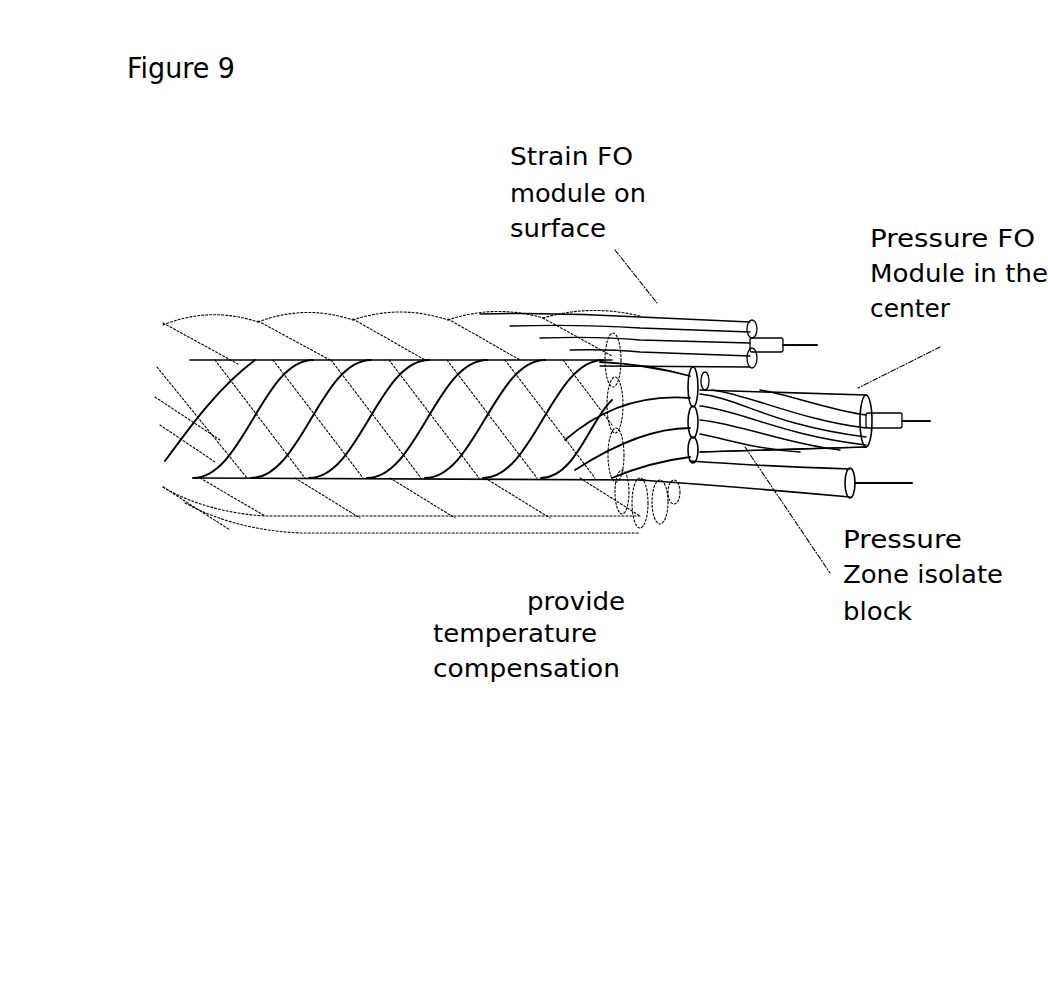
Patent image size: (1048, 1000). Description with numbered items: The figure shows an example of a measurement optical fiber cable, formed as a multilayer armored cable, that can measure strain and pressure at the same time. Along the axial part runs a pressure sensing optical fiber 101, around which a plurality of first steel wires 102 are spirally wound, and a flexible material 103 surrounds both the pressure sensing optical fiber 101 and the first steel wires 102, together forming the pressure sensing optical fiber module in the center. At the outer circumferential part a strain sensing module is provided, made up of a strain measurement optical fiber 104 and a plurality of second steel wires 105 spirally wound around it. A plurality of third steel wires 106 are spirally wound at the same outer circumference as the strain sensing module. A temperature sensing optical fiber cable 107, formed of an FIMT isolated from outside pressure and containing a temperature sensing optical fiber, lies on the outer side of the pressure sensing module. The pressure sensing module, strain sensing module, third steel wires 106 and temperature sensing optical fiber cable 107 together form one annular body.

The pressure sensing optical fiber 101 is at (890, 409).
The first steel wires 102 is at (857, 448).
The flexible material 103 is at (765, 392).
The strain measurement optical fiber 104 is at (768, 337).
The second steel wires 105 is at (683, 318).
The third steel wires 106 is at (290, 308).
The temperature sensing optical fiber cable 107 is at (735, 486).